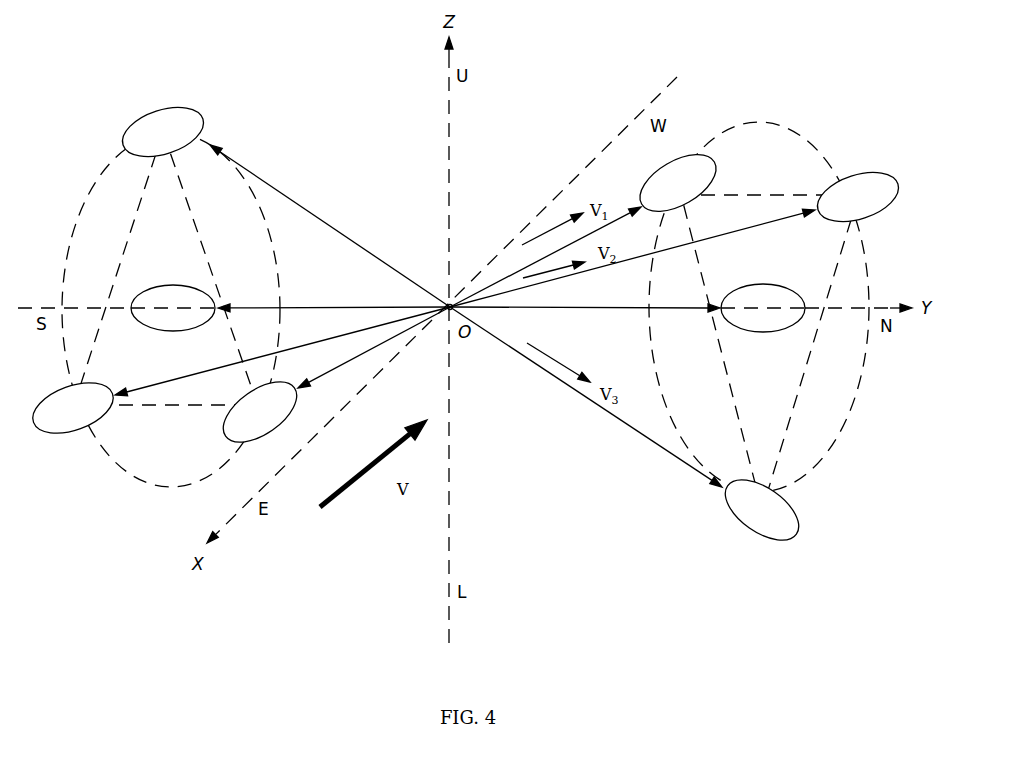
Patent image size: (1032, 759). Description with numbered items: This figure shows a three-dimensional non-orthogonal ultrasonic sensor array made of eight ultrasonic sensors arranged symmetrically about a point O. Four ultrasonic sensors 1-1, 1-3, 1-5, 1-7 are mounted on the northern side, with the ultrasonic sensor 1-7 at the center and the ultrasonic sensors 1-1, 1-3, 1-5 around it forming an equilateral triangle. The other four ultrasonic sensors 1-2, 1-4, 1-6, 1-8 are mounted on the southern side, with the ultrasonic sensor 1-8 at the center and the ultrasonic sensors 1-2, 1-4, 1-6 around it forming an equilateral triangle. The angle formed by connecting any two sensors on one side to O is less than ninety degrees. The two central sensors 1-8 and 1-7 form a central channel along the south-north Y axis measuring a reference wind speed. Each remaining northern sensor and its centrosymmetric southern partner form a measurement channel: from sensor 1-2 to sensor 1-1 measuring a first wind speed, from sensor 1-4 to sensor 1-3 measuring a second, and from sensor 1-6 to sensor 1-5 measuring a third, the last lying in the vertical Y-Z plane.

The ultrasonic sensor 1-1 is at (716, 156).
The ultrasonic sensor 1-2 is at (221, 433).
The ultrasonic sensor 1-3 is at (900, 180).
The ultrasonic sensor 1-4 is at (80, 436).
The ultrasonic sensor 1-5 is at (800, 528).
The ultrasonic sensor 1-6 is at (170, 109).
The ultrasonic sensor 1-7 is at (765, 281).
The ultrasonic sensor 1-8 is at (172, 285).